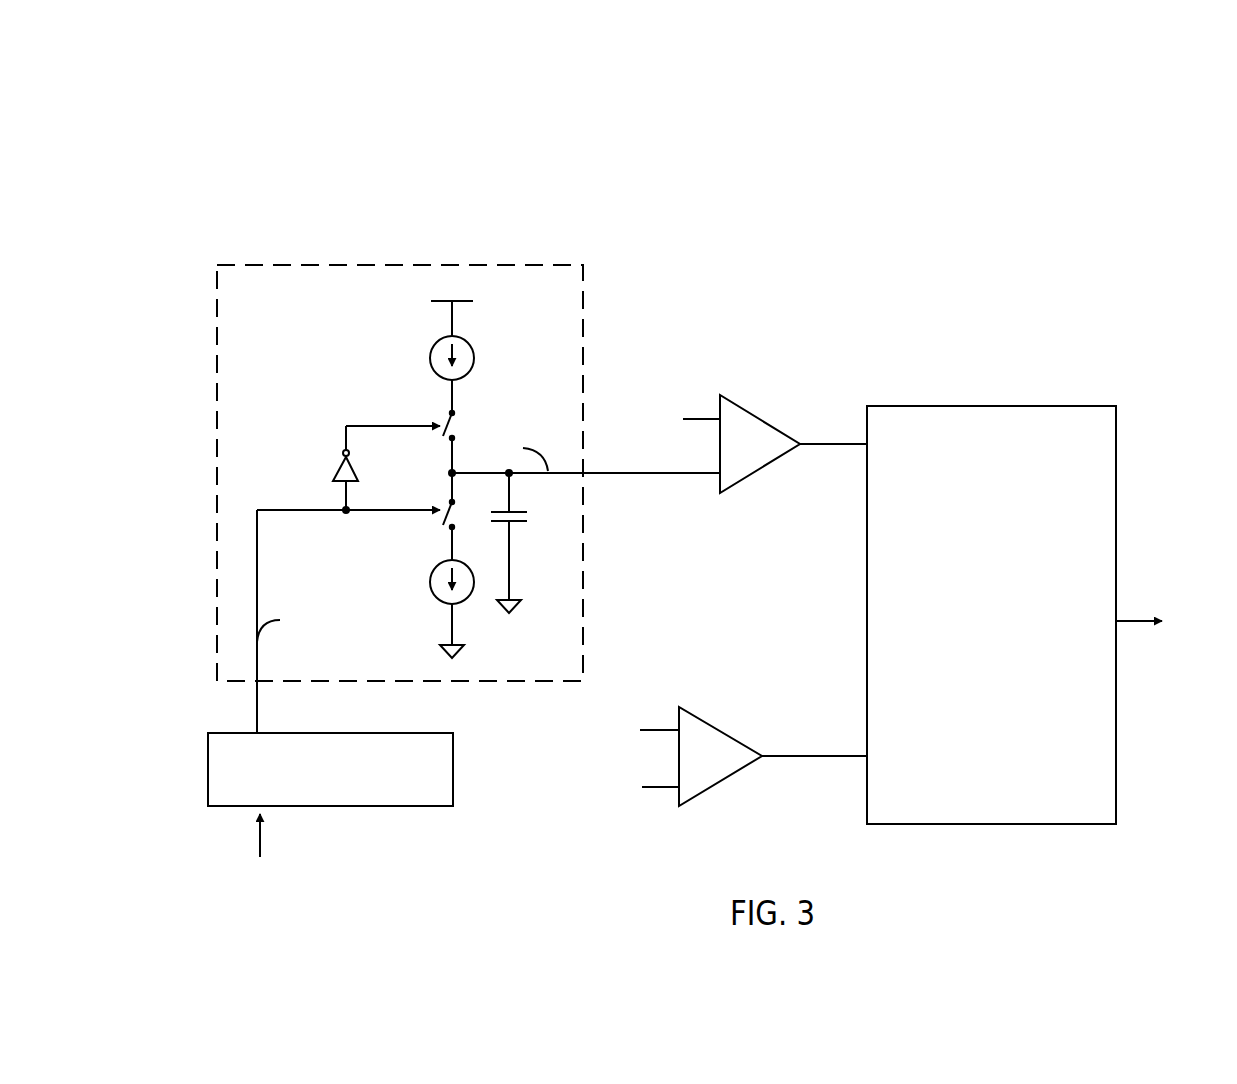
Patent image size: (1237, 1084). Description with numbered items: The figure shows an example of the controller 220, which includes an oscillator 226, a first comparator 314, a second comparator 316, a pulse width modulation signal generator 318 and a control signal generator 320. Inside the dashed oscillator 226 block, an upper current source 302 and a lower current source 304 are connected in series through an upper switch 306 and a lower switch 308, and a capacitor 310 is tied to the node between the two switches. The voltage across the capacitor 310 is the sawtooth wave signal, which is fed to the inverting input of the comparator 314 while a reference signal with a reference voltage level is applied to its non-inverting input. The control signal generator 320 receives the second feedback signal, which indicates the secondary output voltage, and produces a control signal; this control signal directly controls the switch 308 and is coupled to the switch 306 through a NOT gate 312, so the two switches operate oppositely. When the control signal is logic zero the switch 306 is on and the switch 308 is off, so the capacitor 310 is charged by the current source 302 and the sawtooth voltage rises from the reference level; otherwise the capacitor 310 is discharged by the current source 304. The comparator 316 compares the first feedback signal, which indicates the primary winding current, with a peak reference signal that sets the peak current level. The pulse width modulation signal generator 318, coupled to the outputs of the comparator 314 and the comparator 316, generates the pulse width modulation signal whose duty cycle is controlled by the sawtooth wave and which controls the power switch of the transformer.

The controller 220 is at (243, 170).
The oscillator 226 is at (345, 264).
The current source 302 is at (431, 360).
The current source 304 is at (431, 576).
The switch 306 is at (450, 417).
The switch 308 is at (450, 502).
The capacitor 310 is at (513, 524).
The NOT gate 312 is at (337, 468).
The comparator 314 is at (759, 414).
The comparator 316 is at (713, 723).
The PWM signal generator 318 is at (1002, 405).
The control signal generator 320 is at (402, 806).